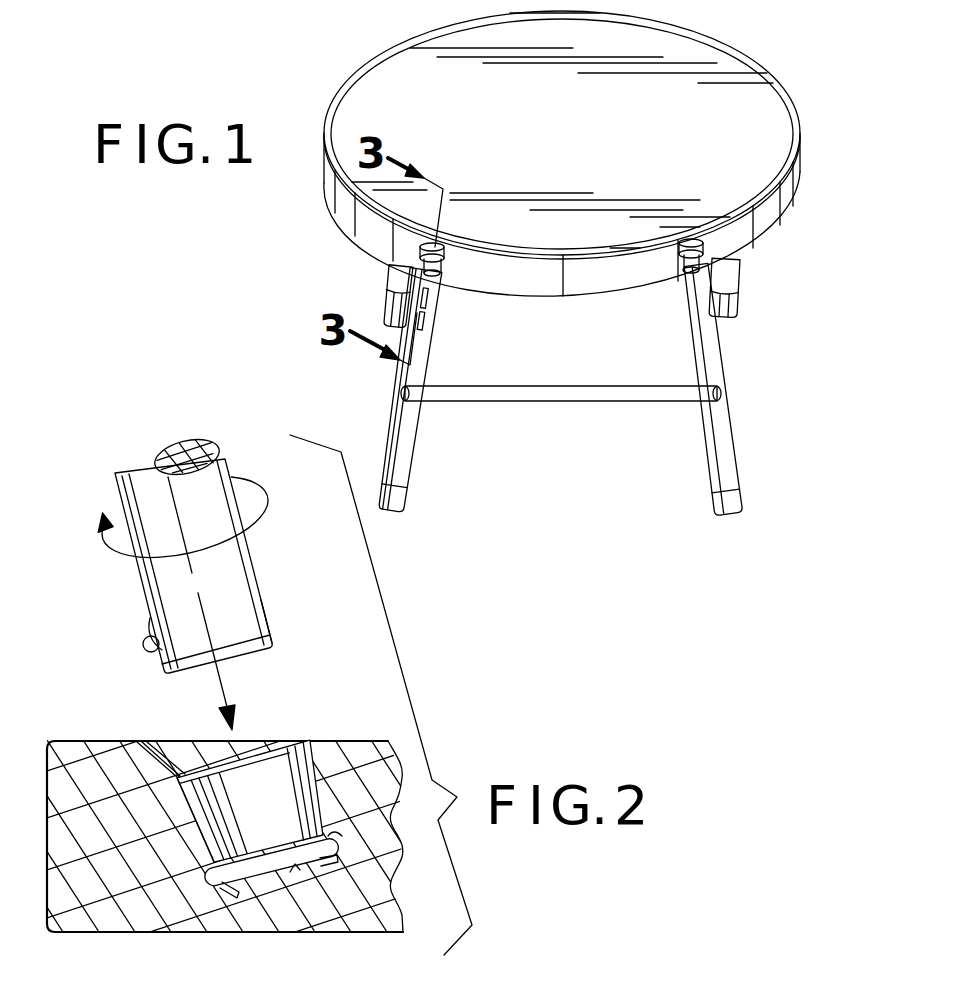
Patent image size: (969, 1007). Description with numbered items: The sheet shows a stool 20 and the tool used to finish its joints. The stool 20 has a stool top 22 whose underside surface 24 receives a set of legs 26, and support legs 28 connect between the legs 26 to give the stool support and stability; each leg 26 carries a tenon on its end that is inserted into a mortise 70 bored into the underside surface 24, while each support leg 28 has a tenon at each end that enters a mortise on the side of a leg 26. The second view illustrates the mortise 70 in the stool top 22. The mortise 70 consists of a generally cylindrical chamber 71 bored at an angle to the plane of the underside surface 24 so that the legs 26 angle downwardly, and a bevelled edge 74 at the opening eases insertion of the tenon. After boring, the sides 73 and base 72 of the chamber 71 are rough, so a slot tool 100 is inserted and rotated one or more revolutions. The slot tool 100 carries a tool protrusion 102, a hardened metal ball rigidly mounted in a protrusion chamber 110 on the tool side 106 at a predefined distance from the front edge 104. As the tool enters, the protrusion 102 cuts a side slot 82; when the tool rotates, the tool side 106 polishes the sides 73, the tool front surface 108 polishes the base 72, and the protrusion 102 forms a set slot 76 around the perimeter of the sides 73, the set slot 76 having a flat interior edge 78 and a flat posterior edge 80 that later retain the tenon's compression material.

In FIG. 1, the stool 20 is at (686, 80).
In FIG. 1, the stool top 22 is at (387, 98).
In FIG. 2, the stool top 22 is at (108, 760).
In FIG. 1, the underside surface 24 is at (757, 243).
In FIG. 1, the leg 26 is at (728, 452).
In FIG. 1, the support leg 28 is at (527, 398).
In FIG. 2, the mortise 70 is at (290, 725).
In FIG. 2, the chamber 71 is at (265, 785).
In FIG. 2, the base 72 is at (297, 877).
In FIG. 2, the sides 73 is at (313, 786).
In FIG. 2, the bevelled edge 74 is at (163, 753).
In FIG. 2, the set slot 76 is at (253, 868).
In FIG. 2, the flat interior edge 78 is at (338, 831).
In FIG. 2, the flat posterior edge 80 is at (212, 892).
In FIG. 2, the side slot 82 is at (193, 828).
In FIG. 2, the slot tool 100 is at (92, 482).
In FIG. 2, the tool protrusion 102 is at (143, 641).
In FIG. 2, the front edge 104 is at (268, 648).
In FIG. 2, the tool side 106 is at (223, 455).
In FIG. 2, the tool front surface 108 is at (228, 655).
In FIG. 2, the protrusion chamber 110 is at (146, 620).